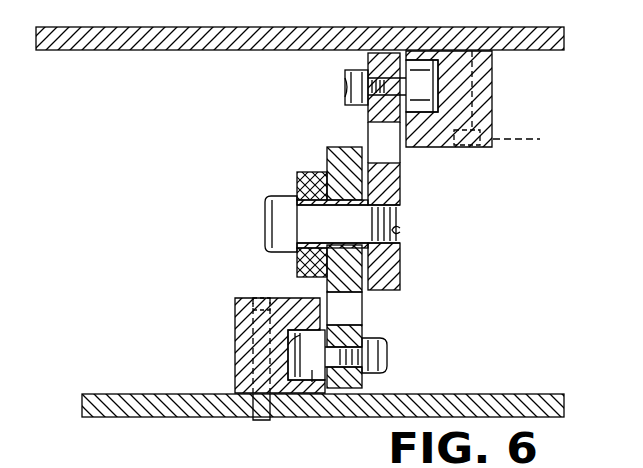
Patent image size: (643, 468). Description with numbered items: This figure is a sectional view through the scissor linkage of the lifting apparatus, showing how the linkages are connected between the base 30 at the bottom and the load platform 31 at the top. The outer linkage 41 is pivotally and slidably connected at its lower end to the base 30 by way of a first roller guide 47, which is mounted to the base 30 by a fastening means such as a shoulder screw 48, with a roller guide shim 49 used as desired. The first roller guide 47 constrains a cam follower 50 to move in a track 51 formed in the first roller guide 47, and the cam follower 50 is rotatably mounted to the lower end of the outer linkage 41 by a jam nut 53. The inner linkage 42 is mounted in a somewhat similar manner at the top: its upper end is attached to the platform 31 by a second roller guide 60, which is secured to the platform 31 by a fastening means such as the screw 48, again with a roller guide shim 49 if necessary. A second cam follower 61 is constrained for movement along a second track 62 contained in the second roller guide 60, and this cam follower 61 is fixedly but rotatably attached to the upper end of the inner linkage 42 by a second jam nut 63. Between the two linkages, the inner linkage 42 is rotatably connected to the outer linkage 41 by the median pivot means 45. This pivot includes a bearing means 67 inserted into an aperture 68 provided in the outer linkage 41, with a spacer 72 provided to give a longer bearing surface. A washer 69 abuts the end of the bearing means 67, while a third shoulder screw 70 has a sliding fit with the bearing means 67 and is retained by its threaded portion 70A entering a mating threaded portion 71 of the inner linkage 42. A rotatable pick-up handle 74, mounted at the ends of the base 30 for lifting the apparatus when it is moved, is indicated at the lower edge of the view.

The base 30 is at (107, 393).
The load platform 31 is at (88, 51).
The outer linkage 41 is at (357, 311).
The inner linkage 42 is at (377, 130).
The median pivot means 45 is at (295, 189).
The first roller guide 47 is at (235, 300).
The shoulder screw 48 is at (196, 323).
The roller guide shim 49 is at (493, 50).
The cam follower 50 is at (312, 382).
The track 51 is at (290, 342).
The jam nut 53 is at (367, 337).
The second roller guide 60 is at (493, 108).
The second cam follower 61 is at (426, 72).
The second track 62 is at (447, 146).
The second jam nut 63 is at (346, 77).
The bearing means 67 is at (322, 174).
The aperture 68 is at (345, 245).
The washer 69 is at (298, 262).
The third shoulder screw 70 is at (282, 208).
The threaded portion 70A is at (400, 247).
The mating threaded portion 71 is at (400, 218).
The spacer 72 is at (325, 164).
The rotatable pick-up handle 74 is at (92, 467).